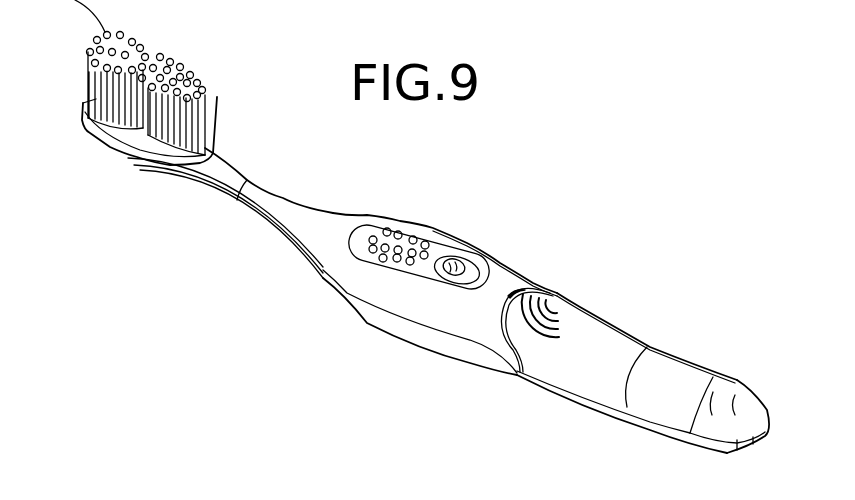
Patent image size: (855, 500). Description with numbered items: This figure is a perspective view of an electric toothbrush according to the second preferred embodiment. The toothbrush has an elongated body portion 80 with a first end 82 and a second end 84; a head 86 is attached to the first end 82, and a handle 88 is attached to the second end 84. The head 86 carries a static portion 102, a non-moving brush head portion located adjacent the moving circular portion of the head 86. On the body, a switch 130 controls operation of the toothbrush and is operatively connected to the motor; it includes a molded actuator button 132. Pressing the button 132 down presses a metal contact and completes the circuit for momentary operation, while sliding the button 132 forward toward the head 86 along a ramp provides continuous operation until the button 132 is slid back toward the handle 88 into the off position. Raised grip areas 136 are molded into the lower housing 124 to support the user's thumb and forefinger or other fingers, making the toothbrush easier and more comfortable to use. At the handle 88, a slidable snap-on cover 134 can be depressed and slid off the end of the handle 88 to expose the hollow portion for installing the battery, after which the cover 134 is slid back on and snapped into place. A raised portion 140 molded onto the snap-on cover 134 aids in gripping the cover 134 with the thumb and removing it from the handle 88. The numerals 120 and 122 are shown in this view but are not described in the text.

The elongated body portion 80 is at (447, 318).
The first end 82 is at (163, 178).
The second end 84 is at (653, 433).
The head 86 is at (115, 148).
The handle 88 is at (740, 383).
The static portion 102 is at (170, 60).
The grip strip 120 is at (250, 198).
The lower side panel 122 is at (407, 330).
The lower housing 124 is at (337, 230).
The switch 130 is at (440, 260).
The molded actuator button 132 is at (463, 260).
The slidable snap-on cover 134 is at (610, 340).
The raised grip areas 136 is at (402, 237).
The raised portion 140 is at (557, 305).